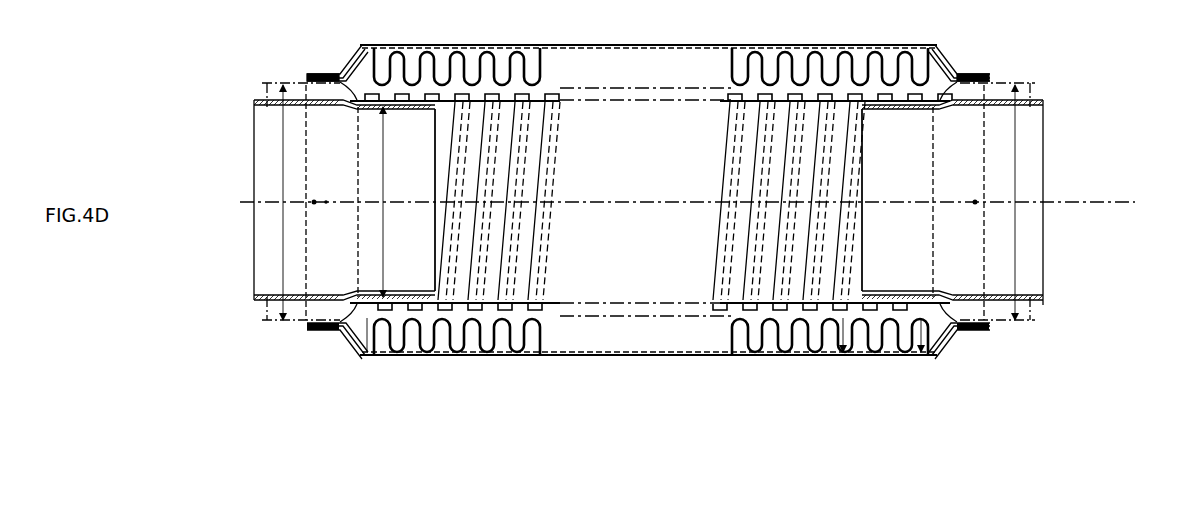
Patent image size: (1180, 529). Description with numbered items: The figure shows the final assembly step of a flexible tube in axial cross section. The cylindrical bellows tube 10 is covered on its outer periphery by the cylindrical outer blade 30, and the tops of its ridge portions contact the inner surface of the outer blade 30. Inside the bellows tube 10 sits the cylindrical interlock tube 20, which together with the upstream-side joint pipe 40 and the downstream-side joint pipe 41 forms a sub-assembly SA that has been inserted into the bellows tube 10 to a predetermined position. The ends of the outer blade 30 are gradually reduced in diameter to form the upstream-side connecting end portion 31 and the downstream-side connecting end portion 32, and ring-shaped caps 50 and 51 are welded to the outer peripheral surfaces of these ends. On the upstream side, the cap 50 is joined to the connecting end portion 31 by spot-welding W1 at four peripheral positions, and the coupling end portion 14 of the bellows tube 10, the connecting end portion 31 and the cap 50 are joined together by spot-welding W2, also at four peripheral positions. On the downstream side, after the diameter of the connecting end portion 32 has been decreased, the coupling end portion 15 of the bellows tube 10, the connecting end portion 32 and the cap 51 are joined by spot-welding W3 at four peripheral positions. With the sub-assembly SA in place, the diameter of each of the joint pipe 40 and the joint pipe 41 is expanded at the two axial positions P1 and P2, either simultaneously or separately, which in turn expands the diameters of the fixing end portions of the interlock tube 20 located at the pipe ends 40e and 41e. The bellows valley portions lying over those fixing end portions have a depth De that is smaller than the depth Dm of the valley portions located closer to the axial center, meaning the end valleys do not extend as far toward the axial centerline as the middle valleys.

The bellows tube 10 is at (532, 60).
The interlock tube 20 is at (556, 95).
The outer blade 30 is at (688, 43).
The upstream-side joint pipe 40 is at (258, 100).
The downstream-side joint pipe 41 is at (1043, 100).
The end of first pipe 40e is at (400, 105).
The end of second pipe 41e is at (880, 105).
The upstream-side coupling end portion 14 is at (316, 322).
The downstream-side coupling end portion 15 is at (950, 92).
The upstream-side connecting end portion 31 is at (318, 75).
The downstream-side connecting end portion 32 is at (962, 72).
The upstream-side cap 50 is at (345, 58).
The downstream-side cap 51 is at (940, 50).
The spot-welding W1 is at (325, 84).
The spot-welding W2 is at (300, 77).
The spot-welding W3 is at (986, 78).
The axial position P1 is at (648, 203).
The axial position P2 is at (644, 203).
The depth of valley portion De is at (377, 340).
The depth of valley portion Dm is at (838, 340).
The sub-assembly SA is at (1040, 308).